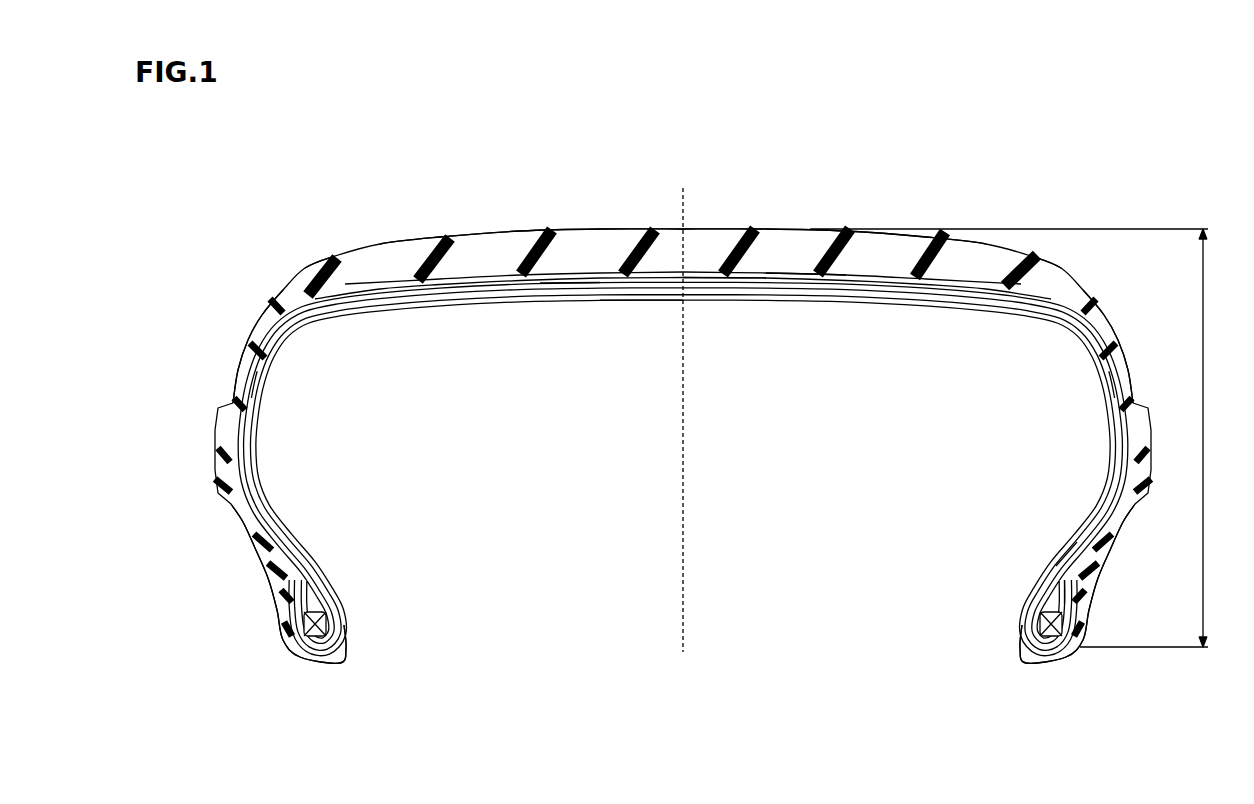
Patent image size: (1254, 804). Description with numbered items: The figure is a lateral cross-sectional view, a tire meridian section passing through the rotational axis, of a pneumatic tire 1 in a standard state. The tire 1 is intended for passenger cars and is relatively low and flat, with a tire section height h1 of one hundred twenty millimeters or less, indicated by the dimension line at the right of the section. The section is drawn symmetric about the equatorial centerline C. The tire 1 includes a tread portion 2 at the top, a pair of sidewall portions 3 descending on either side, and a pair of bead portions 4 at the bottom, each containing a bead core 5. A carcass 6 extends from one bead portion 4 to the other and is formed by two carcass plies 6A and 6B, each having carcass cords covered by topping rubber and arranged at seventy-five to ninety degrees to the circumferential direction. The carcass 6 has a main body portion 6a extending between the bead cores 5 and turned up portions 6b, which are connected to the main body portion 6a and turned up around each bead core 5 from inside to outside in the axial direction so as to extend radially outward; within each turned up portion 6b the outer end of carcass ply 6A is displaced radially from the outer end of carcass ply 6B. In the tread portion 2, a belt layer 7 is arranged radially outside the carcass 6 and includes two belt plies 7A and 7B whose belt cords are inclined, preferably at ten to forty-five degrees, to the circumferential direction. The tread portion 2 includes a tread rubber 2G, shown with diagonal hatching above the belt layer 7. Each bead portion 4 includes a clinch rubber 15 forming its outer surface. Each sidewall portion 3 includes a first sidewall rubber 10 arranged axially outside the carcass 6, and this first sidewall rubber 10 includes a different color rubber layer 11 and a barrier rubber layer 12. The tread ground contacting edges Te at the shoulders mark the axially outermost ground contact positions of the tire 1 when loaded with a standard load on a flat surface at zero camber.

The pneumatic tire 1 is at (366, 220).
The tread portion 2 is at (577, 226).
The tread rubber 2G is at (485, 258).
The sidewall portion 3 is at (227, 362).
The bead portion 4 is at (266, 598).
The bead core 5 is at (338, 616).
The carcass 6 is at (550, 376).
The carcass ply 6A is at (565, 300).
The carcass ply 6B is at (632, 298).
The main body portion 6a is at (1035, 585).
The turned up portion 6b is at (1073, 543).
The belt layer 7 is at (727, 376).
The belt ply 7A is at (742, 298).
The belt ply 7B is at (826, 298).
The first sidewall rubber 10 is at (264, 328).
The different color rubber layer 11 is at (231, 432).
The barrier rubber layer 12 is at (252, 380).
The clinch rubber 15 is at (266, 563).
The tread ground contacting edge Te is at (331, 256).
The tire equator C is at (683, 405).
The tire section height h1 is at (1024, 438).